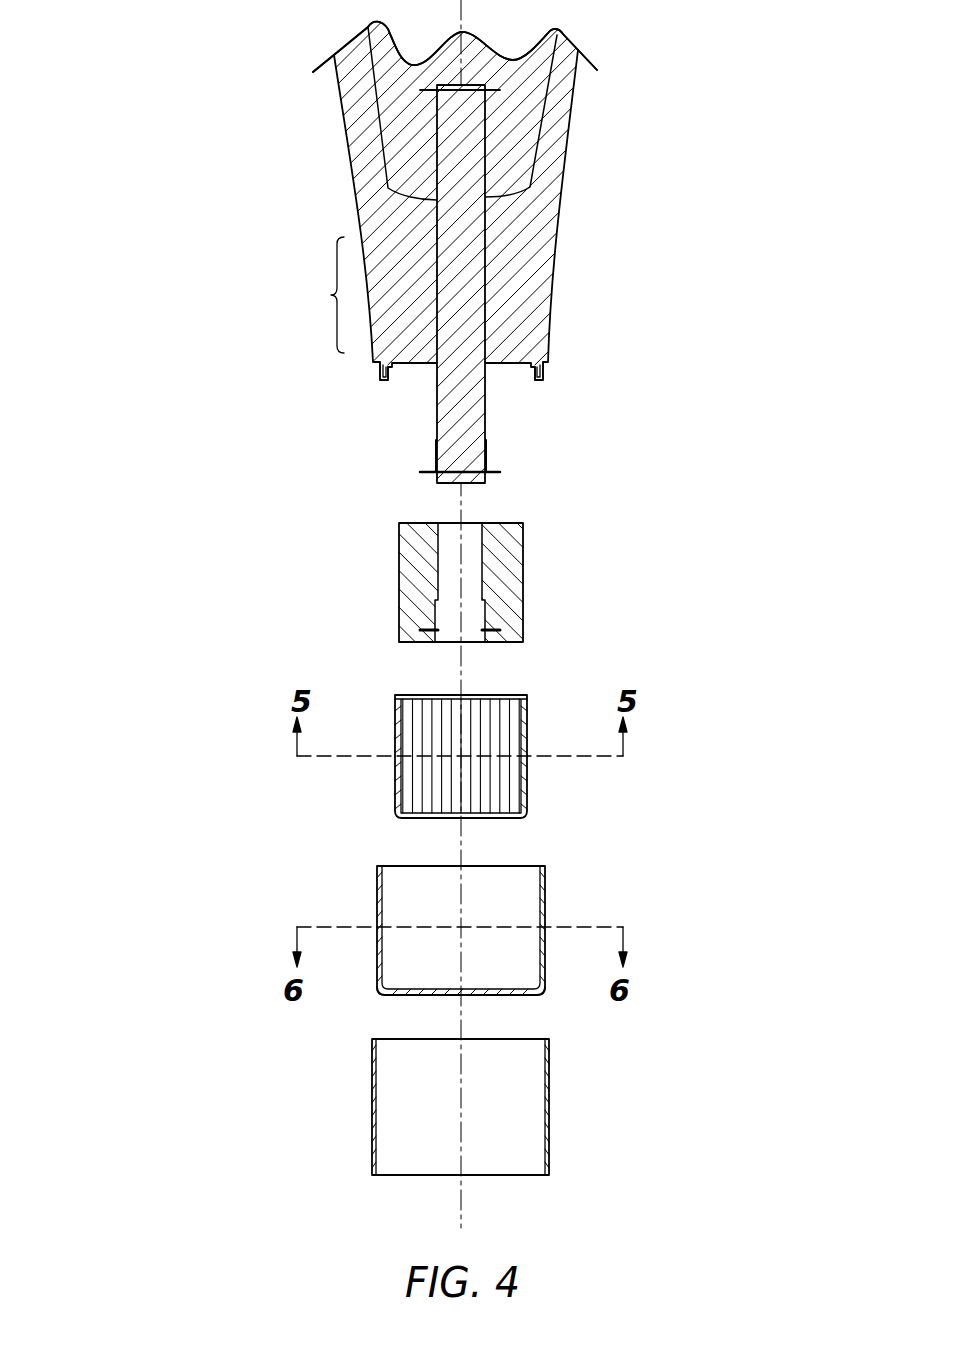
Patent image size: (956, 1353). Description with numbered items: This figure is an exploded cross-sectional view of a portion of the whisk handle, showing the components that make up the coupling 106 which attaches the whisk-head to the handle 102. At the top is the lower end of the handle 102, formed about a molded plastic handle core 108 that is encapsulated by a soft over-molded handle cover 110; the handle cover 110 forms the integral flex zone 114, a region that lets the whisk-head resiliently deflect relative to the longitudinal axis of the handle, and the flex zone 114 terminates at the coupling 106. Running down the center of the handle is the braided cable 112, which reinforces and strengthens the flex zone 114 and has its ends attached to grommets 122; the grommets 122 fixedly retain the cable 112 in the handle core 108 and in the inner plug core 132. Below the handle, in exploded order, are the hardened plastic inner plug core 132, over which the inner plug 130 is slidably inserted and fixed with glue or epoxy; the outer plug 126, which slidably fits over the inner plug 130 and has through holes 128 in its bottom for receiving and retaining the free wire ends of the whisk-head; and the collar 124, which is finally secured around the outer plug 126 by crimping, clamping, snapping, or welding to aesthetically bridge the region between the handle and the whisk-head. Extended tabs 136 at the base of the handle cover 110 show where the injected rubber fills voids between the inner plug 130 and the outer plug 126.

The handle 102 is at (567, 92).
The coupling 106 is at (158, 200).
The handle core 108 is at (402, 145).
The handle cover 110 is at (556, 118).
The cable 112 is at (478, 410).
The flex zone 114 is at (313, 295).
The grommets 122 is at (420, 471).
The collar 124 is at (549, 1070).
The outer plug 126 is at (545, 892).
The through holes 128 is at (403, 990).
The inner plug 130 is at (527, 786).
The inner plug core 132 is at (511, 573).
The extended tabs 136 is at (382, 377).